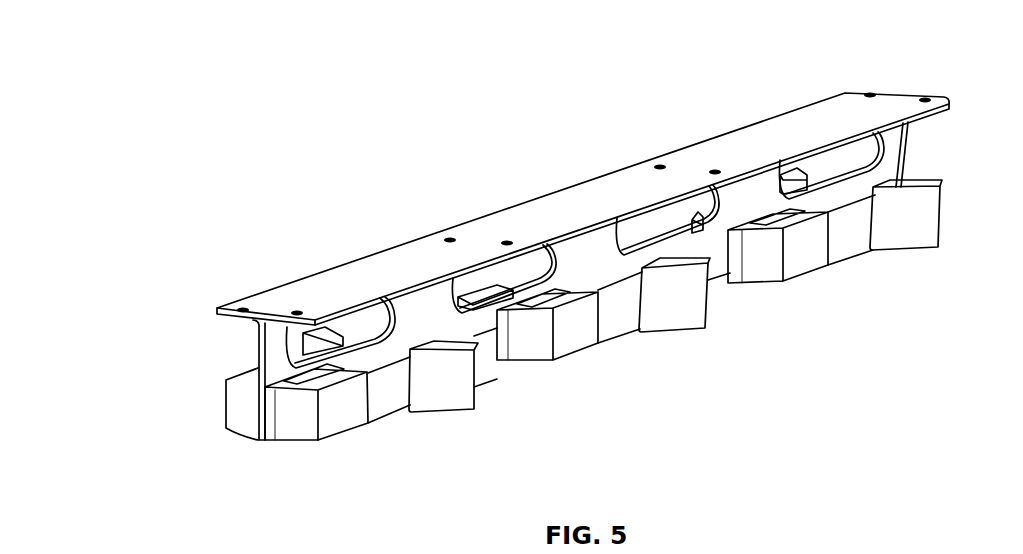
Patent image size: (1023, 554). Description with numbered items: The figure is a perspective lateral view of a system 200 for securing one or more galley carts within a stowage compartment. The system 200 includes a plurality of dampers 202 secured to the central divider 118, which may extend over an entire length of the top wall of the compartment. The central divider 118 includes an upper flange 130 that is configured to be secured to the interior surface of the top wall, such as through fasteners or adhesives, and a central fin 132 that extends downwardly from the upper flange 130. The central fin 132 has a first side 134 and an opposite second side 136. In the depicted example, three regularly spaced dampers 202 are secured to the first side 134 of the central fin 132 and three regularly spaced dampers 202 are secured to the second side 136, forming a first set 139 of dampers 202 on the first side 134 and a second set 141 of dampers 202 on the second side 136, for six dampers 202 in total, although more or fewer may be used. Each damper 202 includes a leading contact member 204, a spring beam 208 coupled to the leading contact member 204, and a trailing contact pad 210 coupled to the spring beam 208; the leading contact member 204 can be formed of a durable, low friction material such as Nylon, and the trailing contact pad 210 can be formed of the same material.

The central divider 118 is at (892, 100).
The upper flange 130 is at (822, 113).
The central fin 132 is at (907, 160).
The first side 134 is at (255, 350).
The second side 136 is at (425, 305).
The first set 139 is at (206, 407).
The second set 141 is at (251, 447).
The system 200 is at (184, 378).
The damper 202 is at (812, 170).
The leading contact member 204 is at (295, 425).
The spring beam 208 is at (388, 400).
The trailing contact pad 210 is at (463, 403).